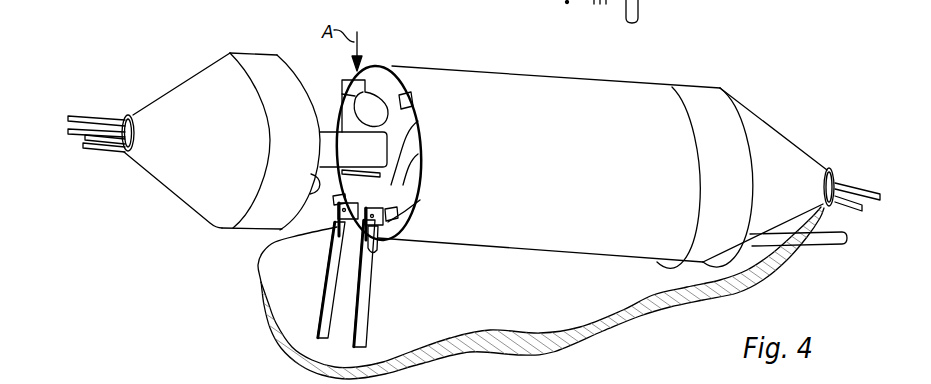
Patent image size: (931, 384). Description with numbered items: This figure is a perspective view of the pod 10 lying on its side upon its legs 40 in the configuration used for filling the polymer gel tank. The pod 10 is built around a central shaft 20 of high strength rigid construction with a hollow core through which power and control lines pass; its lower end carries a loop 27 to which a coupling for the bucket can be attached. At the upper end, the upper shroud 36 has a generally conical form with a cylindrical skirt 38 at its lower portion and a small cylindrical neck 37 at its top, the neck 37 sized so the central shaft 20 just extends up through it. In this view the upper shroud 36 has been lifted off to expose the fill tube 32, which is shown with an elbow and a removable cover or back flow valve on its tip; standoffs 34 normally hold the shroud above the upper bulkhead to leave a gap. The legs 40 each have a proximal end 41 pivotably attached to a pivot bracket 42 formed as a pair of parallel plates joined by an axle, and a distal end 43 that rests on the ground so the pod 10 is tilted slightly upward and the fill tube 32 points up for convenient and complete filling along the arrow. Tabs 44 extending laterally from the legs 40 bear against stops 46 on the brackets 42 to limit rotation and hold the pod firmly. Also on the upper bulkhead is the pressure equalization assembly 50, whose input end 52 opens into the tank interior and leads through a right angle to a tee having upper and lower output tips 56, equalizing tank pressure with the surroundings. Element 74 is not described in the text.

The pod 10 is at (155, 264).
The central shaft 20 is at (337, 131).
The loop 27 is at (842, 185).
The fill tube 32 is at (366, 82).
The standoffs 34 is at (408, 93).
The upper shroud 36 is at (195, 148).
The neck 37 is at (132, 118).
The cylindrical skirt 38 is at (301, 115).
The legs 40 is at (332, 283).
The proximal end 41 is at (336, 240).
The pivot brackets 42 is at (400, 212).
The distal ends 43 is at (322, 330).
The tabs 44 is at (338, 216).
The stops 46 is at (377, 248).
The pressure equalization assembly 50 is at (421, 155).
The input end 52 is at (420, 122).
The output tips 56 is at (316, 184).
The cone 74 is at (764, 132).